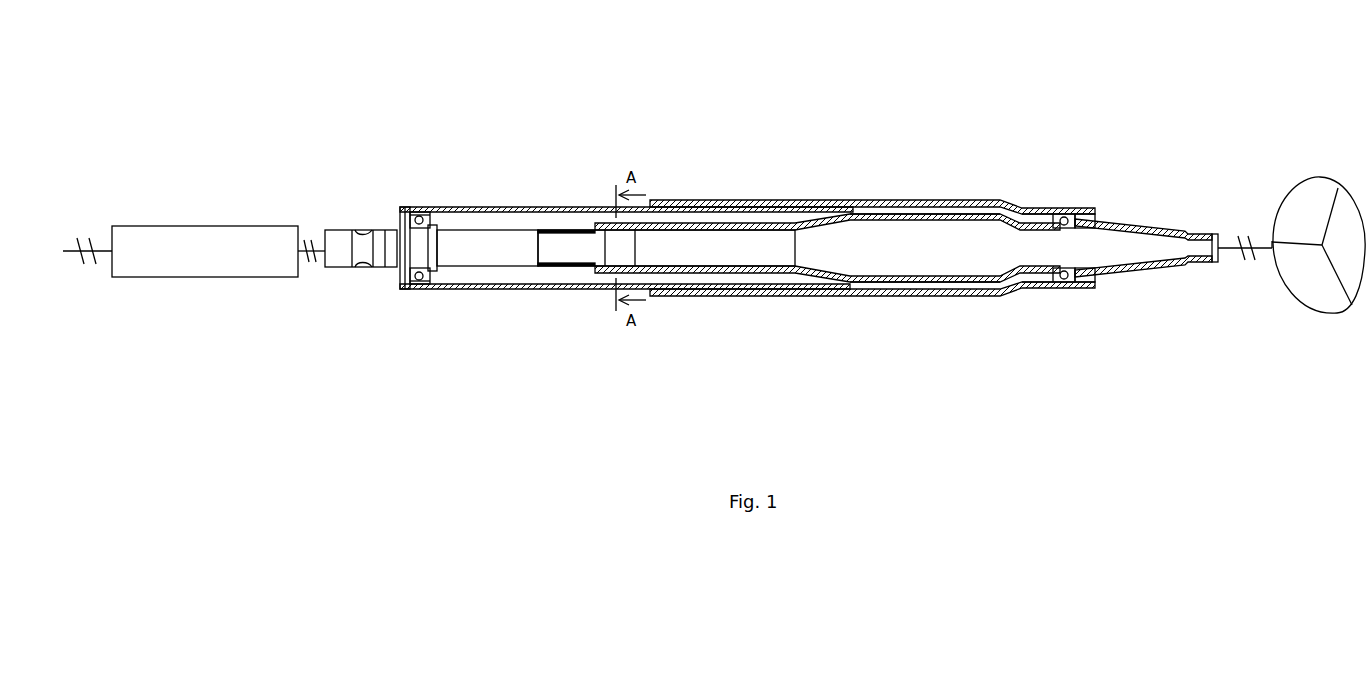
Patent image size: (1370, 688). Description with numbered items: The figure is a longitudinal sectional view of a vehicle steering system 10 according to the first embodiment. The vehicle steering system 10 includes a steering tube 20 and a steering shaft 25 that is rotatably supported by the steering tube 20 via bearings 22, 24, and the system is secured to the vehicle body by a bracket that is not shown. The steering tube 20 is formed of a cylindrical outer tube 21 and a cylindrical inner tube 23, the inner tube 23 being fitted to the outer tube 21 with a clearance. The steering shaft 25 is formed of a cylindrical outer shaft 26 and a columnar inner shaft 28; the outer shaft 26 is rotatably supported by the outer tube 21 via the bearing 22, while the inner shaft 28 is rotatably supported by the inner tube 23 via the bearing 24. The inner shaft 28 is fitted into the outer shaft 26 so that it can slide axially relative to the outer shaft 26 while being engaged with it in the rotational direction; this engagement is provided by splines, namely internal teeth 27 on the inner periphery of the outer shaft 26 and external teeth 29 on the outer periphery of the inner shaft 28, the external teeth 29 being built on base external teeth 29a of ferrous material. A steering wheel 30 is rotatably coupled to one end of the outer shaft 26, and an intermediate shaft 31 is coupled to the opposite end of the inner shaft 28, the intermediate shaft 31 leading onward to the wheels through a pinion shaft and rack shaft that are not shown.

The vehicle steering system 10 is at (823, 184).
The steering tube 20 is at (953, 197).
The outer tube 21 is at (1000, 208).
The bearing 22 is at (1066, 212).
The inner tube 23 is at (491, 206).
The bearing 24 is at (418, 284).
The steering shaft 25 is at (910, 214).
The outer shaft 26 is at (1136, 220).
The internal teeth 27 is at (604, 270).
The inner shaft 28 is at (516, 245).
The external teeth 29 is at (654, 290).
The base external teeth 29a is at (552, 268).
The steering wheel 30 is at (1320, 316).
The intermediate shaft 31 is at (243, 288).